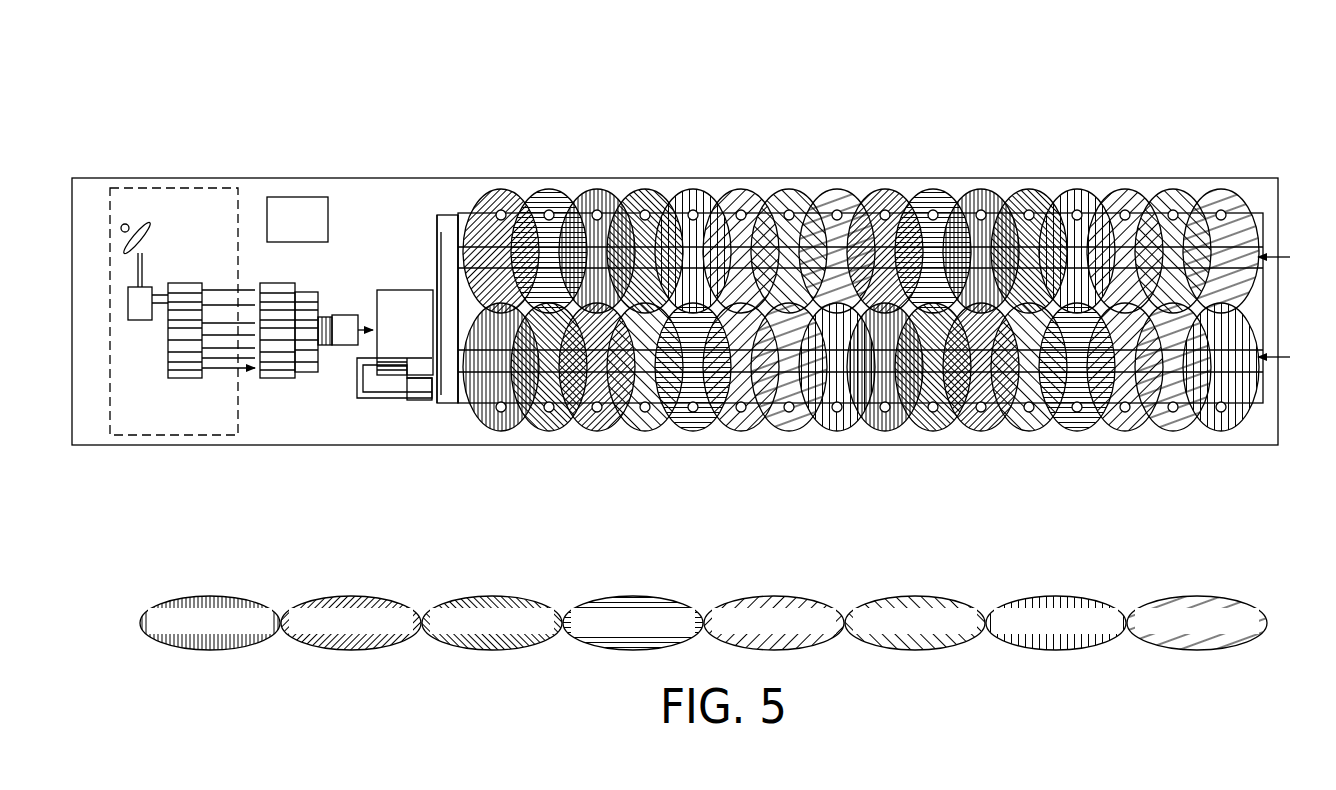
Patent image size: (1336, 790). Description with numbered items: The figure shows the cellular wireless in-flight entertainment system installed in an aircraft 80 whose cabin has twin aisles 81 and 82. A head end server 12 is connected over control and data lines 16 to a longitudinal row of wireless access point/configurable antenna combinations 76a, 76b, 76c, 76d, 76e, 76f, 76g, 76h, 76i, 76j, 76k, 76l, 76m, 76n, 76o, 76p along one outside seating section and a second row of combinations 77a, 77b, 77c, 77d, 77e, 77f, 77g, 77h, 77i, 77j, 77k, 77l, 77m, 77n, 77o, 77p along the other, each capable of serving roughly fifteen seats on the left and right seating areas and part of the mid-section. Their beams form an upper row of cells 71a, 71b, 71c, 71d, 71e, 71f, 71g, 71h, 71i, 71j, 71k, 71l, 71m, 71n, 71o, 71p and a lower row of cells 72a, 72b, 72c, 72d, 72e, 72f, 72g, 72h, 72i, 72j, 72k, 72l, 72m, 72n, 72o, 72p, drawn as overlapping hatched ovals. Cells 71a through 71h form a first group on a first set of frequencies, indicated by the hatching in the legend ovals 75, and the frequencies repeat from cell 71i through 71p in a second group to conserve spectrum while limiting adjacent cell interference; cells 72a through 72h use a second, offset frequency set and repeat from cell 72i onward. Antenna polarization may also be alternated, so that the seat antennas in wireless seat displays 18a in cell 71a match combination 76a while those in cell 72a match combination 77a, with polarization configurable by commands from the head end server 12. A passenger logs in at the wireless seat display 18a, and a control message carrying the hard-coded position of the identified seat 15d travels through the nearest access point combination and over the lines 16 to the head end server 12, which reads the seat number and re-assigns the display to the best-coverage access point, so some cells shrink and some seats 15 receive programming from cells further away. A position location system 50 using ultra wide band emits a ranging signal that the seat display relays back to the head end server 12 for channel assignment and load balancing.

The aircraft 80 is at (155, 178).
The position location system (PLS) 50 is at (293, 197).
The head end server 12 is at (378, 290).
The seats 15 is at (455, 207).
The seat 15D 15d is at (460, 380).
The control and data lines 16 is at (437, 232).
The wireless seat display 18a is at (455, 262).
The cell 71a is at (493, 190).
The cell 71b is at (541, 190).
The cell 71c is at (589, 190).
The cell 71d is at (637, 190).
The cell 71e is at (685, 190).
The cell 71f is at (733, 190).
The cell 71g is at (781, 190).
The cell 71h is at (829, 190).
The cell 71i is at (877, 190).
The cell 71j is at (925, 190).
The cell 71k is at (973, 190).
The cell 71l is at (1021, 190).
The cell 71m is at (1069, 190).
The cell 71n is at (1117, 190).
The cell 71o is at (1165, 190).
The cell 71p is at (1213, 190).
The wireless access point/configurable antenna combination 76a is at (499, 209).
The wireless access point/configurable antenna combination 76b is at (547, 209).
The wireless access point/configurable antenna combination 76c is at (595, 209).
The wireless access point/configurable antenna combination 76d is at (643, 209).
The wireless access point/configurable antenna combination 76e is at (691, 209).
The wireless access point/configurable antenna combination 76f is at (739, 209).
The wireless access point/configurable antenna combination 76g is at (787, 209).
The wireless access point/configurable antenna combination 76h is at (835, 209).
The wireless access point/configurable antenna combination 76i is at (883, 209).
The wireless access point/configurable antenna combination 76j is at (931, 209).
The wireless access point/configurable antenna combination 76k is at (979, 209).
The wireless access point/configurable antenna combination 76l is at (1027, 209).
The wireless access point/configurable antenna combination 76m is at (1075, 209).
The wireless access point/configurable antenna combination 76n is at (1123, 209).
The wireless access point/configurable antenna combination 76o is at (1171, 209).
The wireless access point/configurable antenna combination 76p is at (1219, 209).
The cell 72a is at (507, 432).
The cell 72b is at (555, 432).
The cell 72c is at (603, 432).
The cell 72d is at (651, 432).
The cell 72e is at (699, 432).
The cell 72f is at (747, 432).
The cell 72g is at (795, 432).
The cell 72h is at (843, 432).
The cell 72i is at (891, 432).
The cell 72j is at (939, 432).
The cell 72k is at (987, 432).
The cell 72l is at (1035, 432).
The cell 72m is at (1083, 432).
The cell 72n is at (1131, 432).
The cell 72o is at (1179, 432).
The cell 72p is at (1227, 432).
The wireless access point/configurable antenna combination 77a is at (487, 436).
The wireless access point/configurable antenna combination 77b is at (535, 436).
The wireless access point/configurable antenna combination 77c is at (583, 436).
The wireless access point/configurable antenna combination 77d is at (631, 436).
The wireless access point/configurable antenna combination 77e is at (679, 436).
The wireless access point/configurable antenna combination 77f is at (727, 436).
The wireless access point/configurable antenna combination 77g is at (775, 436).
The wireless access point/configurable antenna combination 77h is at (823, 436).
The wireless access point/configurable antenna combination 77i is at (871, 436).
The wireless access point/configurable antenna combination 77j is at (919, 436).
The wireless access point/configurable antenna combination 77k is at (967, 436).
The wireless access point/configurable antenna combination 77l is at (1015, 436).
The wireless access point/configurable antenna combination 77m is at (1063, 436).
The wireless access point/configurable antenna combination 77n is at (1111, 436).
The wireless access point/configurable antenna combination 77o is at (1159, 436).
The wireless access point/configurable antenna combination 77p is at (1207, 436).
The aisle 81 is at (1290, 257).
The aisle 82 is at (1290, 357).
The legend ovals 75 is at (1268, 601).